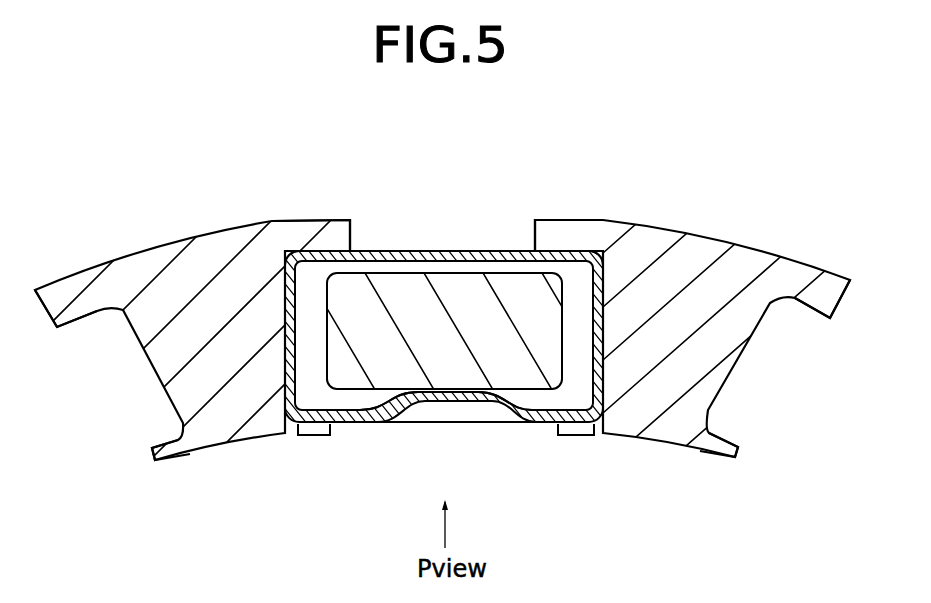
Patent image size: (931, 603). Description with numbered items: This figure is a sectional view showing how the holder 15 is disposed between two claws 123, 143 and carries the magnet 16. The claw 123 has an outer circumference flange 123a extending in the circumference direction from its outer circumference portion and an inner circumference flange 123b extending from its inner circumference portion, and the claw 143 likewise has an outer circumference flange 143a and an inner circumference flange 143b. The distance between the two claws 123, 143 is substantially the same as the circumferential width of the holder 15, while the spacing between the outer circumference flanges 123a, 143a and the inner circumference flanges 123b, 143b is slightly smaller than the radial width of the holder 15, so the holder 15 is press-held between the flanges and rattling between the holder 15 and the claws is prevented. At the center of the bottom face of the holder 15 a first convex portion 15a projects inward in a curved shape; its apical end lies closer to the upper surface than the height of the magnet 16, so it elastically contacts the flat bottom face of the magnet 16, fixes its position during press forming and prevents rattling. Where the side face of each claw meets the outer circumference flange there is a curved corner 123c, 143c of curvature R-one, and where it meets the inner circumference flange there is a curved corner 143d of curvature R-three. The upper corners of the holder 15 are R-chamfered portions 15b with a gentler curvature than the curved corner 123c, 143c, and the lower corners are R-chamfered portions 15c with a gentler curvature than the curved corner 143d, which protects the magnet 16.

The holder 15 is at (411, 251).
The first convex portion 15a is at (438, 395).
The R-chamfered portion 15b is at (285, 265).
The R-chamfered portion 15c is at (290, 436).
The magnet 16 is at (458, 278).
The claw 123 is at (753, 260).
The outer circumference flange 123a is at (547, 230).
The inner circumference flange 123b is at (562, 434).
The curved corner 123c is at (601, 250).
The claw 143 is at (157, 353).
The outer circumference flange 143a is at (65, 286).
The inner circumference flange 143b is at (166, 462).
The curved corner 143c is at (287, 250).
The curved corner 143d is at (287, 421).